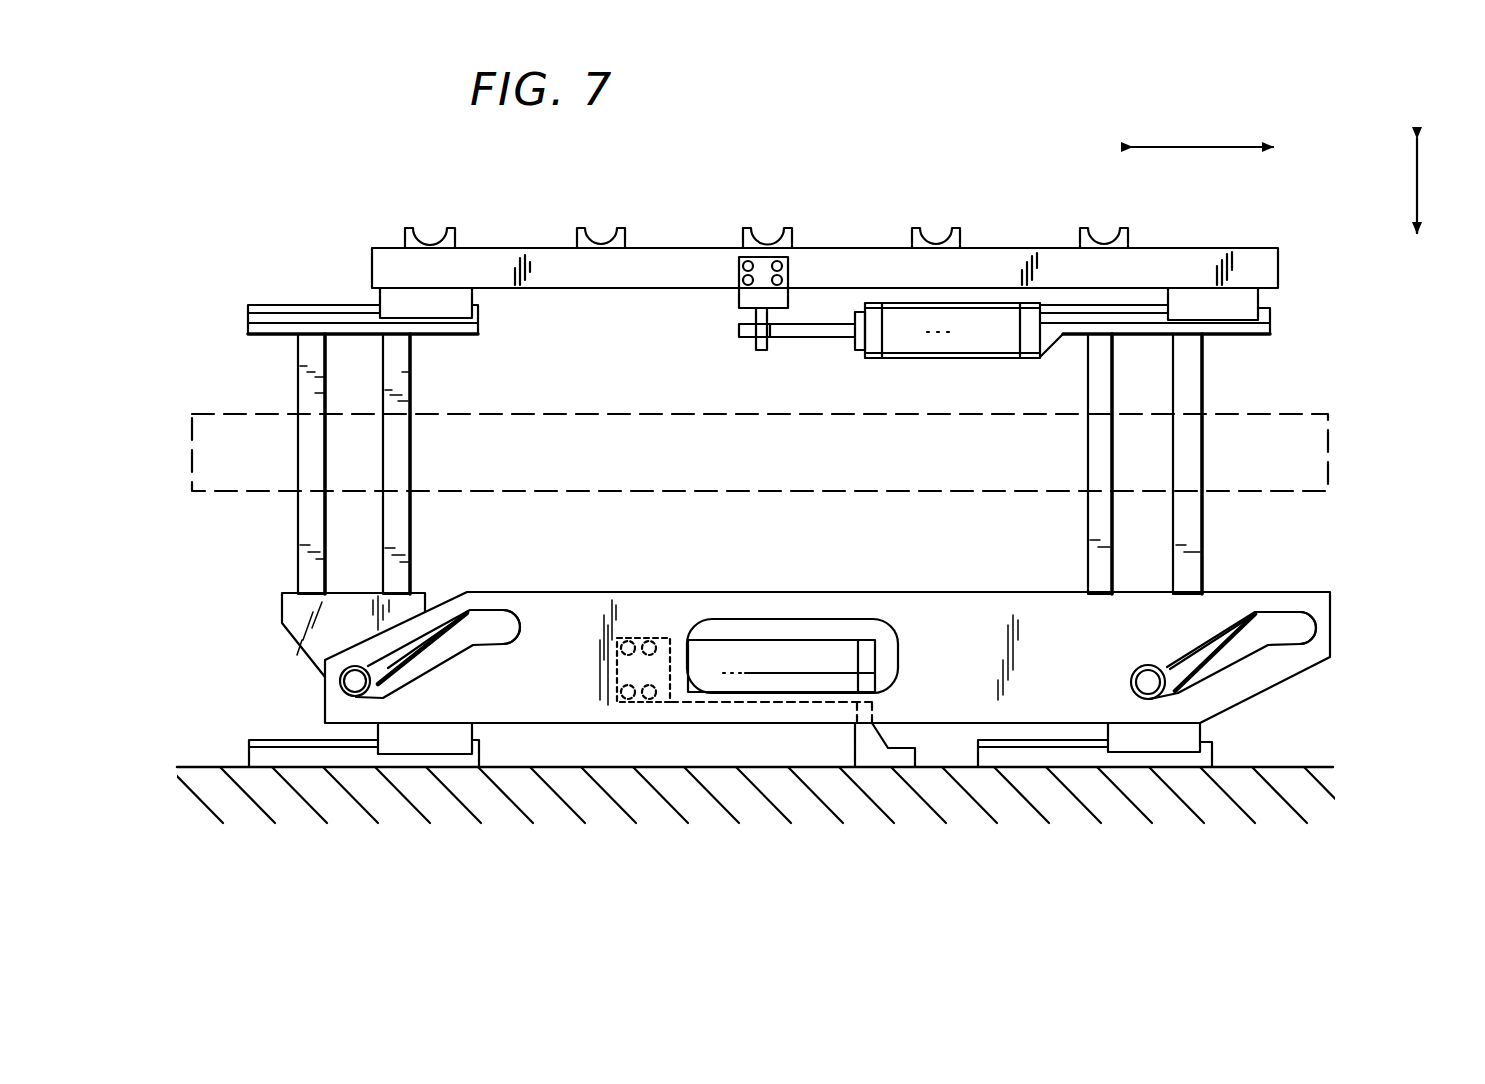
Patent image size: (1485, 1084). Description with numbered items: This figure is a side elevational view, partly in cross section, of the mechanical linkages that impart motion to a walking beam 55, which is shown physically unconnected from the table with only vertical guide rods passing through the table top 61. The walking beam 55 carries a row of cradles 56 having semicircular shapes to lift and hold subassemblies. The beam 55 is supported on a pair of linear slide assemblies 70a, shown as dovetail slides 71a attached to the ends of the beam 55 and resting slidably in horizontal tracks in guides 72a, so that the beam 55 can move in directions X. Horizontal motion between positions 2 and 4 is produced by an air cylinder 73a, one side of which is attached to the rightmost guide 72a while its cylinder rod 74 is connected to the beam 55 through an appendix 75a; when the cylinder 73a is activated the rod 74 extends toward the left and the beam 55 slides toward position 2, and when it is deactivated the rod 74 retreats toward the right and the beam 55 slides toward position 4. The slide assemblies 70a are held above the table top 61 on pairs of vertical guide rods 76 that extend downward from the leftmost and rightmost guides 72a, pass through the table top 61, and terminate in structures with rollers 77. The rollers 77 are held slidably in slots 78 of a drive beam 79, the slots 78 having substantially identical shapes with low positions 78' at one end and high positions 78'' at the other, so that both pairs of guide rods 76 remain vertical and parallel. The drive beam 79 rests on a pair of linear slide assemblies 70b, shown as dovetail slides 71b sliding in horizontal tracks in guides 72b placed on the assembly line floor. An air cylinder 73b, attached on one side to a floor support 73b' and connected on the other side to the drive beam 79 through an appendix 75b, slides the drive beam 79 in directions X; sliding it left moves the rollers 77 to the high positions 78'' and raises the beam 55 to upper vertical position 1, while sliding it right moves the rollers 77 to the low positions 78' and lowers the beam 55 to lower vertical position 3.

The upper vertical position 1 is at (1422, 150).
The position 2 is at (1142, 146).
The lower vertical position 3 is at (1420, 236).
The position 4 is at (1268, 145).
The walking beam 55 is at (1255, 262).
The cradles 56 is at (574, 228).
The table top 61 is at (1330, 432).
The linear slide assemblies 70a is at (800, 303).
The linear slide assemblies 70b is at (779, 691).
The dovetail slides 71a is at (390, 297).
The dovetail slides 71b is at (455, 730).
The guides 72a is at (262, 320).
The guides 72b is at (311, 747).
The air cylinder 73a is at (910, 350).
The air cylinder 73b is at (792, 610).
The floor support 73b' is at (921, 713).
The cylinder rod 74 is at (812, 332).
The appendix 75a is at (742, 278).
The appendix 75b is at (600, 655).
The vertical guide rods 76 is at (325, 393).
The rollers 77 is at (357, 684).
The slots 78 is at (859, 614).
The low positions 78' is at (819, 681).
The high positions 78'' is at (943, 619).
The drive beam 79 is at (1320, 625).